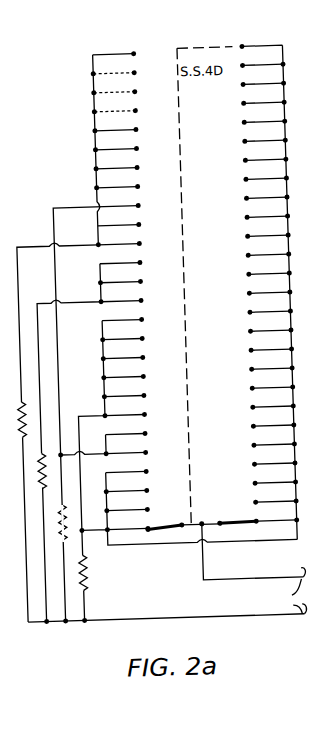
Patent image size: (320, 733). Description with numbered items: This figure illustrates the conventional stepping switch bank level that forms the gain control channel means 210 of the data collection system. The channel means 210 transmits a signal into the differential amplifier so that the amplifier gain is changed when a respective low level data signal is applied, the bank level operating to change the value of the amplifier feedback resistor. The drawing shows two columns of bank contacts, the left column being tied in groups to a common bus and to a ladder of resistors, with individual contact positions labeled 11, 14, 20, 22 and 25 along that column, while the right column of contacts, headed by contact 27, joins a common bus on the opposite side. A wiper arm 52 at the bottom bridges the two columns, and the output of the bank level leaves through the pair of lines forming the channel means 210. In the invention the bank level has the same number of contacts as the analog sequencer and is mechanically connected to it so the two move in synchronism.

The switch contact 27 is at (238, 72).
The tap terminal 11 is at (93, 428).
The tap terminal 14 is at (101, 442).
The tap terminal 20 is at (122, 470).
The tap terminal 22 is at (113, 486).
The tap terminal 25 is at (188, 506).
The switch 52 is at (223, 532).
The gain control channel means 210 is at (254, 569).